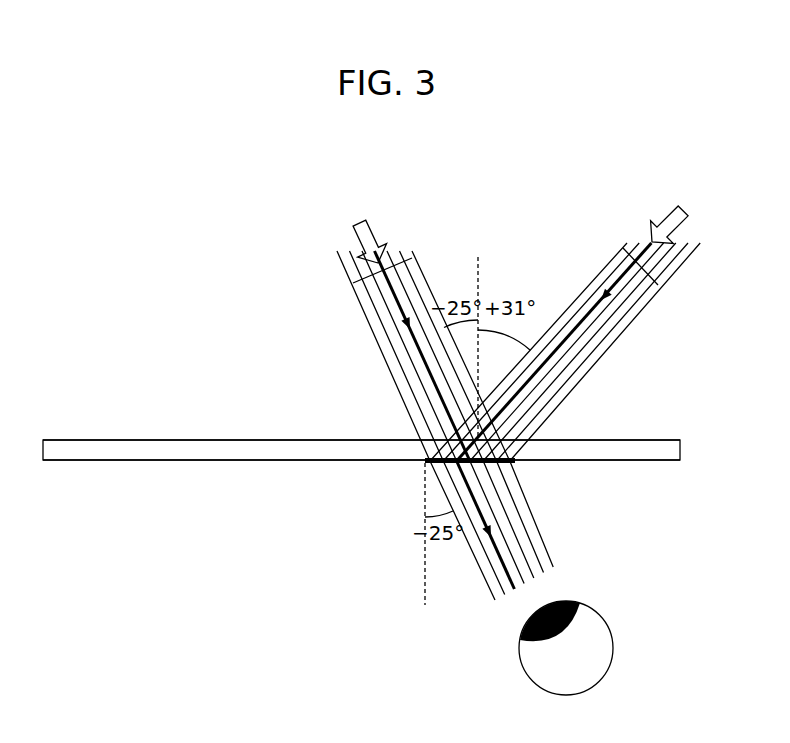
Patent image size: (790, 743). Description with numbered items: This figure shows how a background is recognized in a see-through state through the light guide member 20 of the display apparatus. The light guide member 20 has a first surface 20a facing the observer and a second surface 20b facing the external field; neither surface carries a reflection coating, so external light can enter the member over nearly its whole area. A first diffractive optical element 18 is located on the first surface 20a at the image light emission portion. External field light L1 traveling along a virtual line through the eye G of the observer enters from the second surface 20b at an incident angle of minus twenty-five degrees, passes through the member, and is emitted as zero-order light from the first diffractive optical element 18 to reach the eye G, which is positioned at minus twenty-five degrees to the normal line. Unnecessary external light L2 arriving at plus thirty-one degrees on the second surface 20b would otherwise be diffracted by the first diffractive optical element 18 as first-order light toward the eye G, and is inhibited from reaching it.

The light guide member 20 is at (143, 440).
The second surface 20b is at (218, 440).
The first surface 20a is at (281, 461).
The first diffractive optical element 18 is at (516, 463).
The external field light L1 is at (382, 297).
The unnecessary external light L2 is at (627, 280).
The eye of the observer G is at (608, 618).